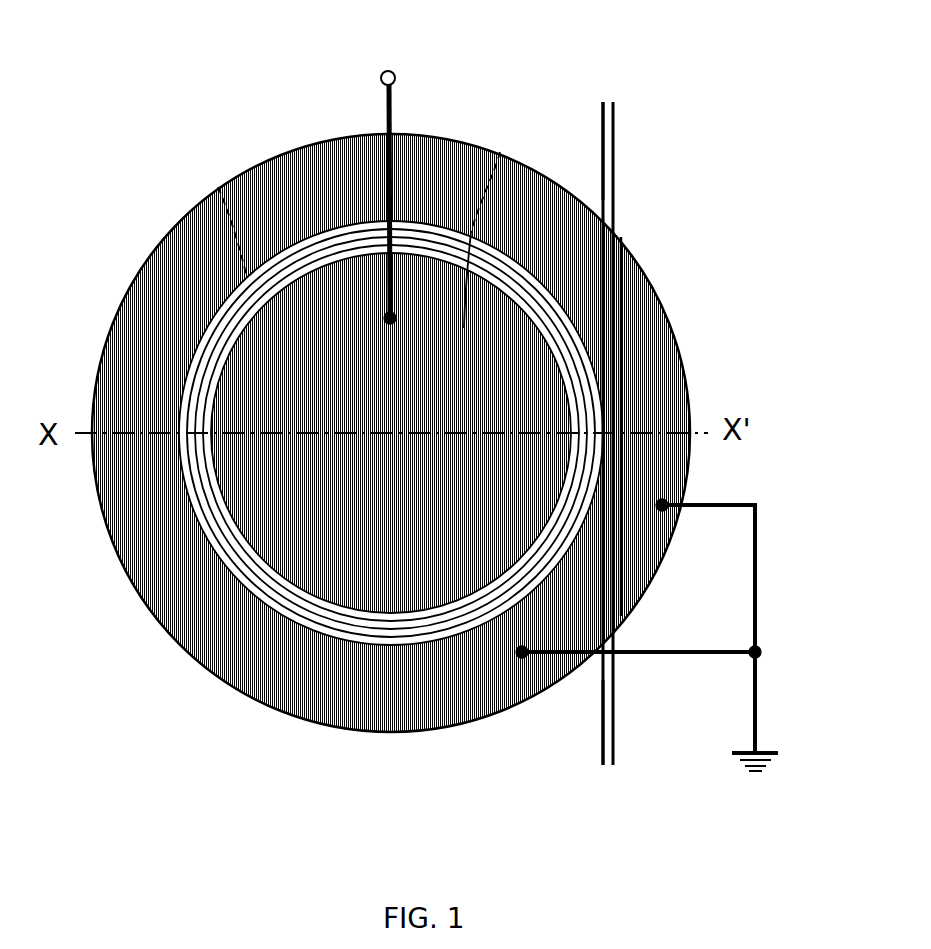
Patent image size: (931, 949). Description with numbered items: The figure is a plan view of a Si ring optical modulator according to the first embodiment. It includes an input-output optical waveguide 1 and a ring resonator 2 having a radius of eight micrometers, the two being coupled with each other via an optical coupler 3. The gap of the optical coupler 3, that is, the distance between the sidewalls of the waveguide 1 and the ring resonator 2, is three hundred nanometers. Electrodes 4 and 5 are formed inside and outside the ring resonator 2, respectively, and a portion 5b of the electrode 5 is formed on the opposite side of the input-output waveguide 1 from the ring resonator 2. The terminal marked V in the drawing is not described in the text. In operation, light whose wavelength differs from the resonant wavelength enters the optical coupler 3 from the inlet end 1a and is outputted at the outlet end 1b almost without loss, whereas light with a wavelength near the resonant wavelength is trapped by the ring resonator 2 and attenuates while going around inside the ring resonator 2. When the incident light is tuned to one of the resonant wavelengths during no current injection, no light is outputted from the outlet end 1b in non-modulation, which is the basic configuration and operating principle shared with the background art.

The input-output optical waveguide 1 is at (605, 248).
The inlet end 1a is at (607, 763).
The outlet end 1b is at (605, 120).
The ring resonator 2 is at (218, 187).
The optical coupler 3 is at (655, 440).
The electrode 4 is at (500, 152).
The electrode 5 is at (340, 679).
The portion of the electrode 5b is at (650, 338).
The voltage terminal V is at (390, 174).